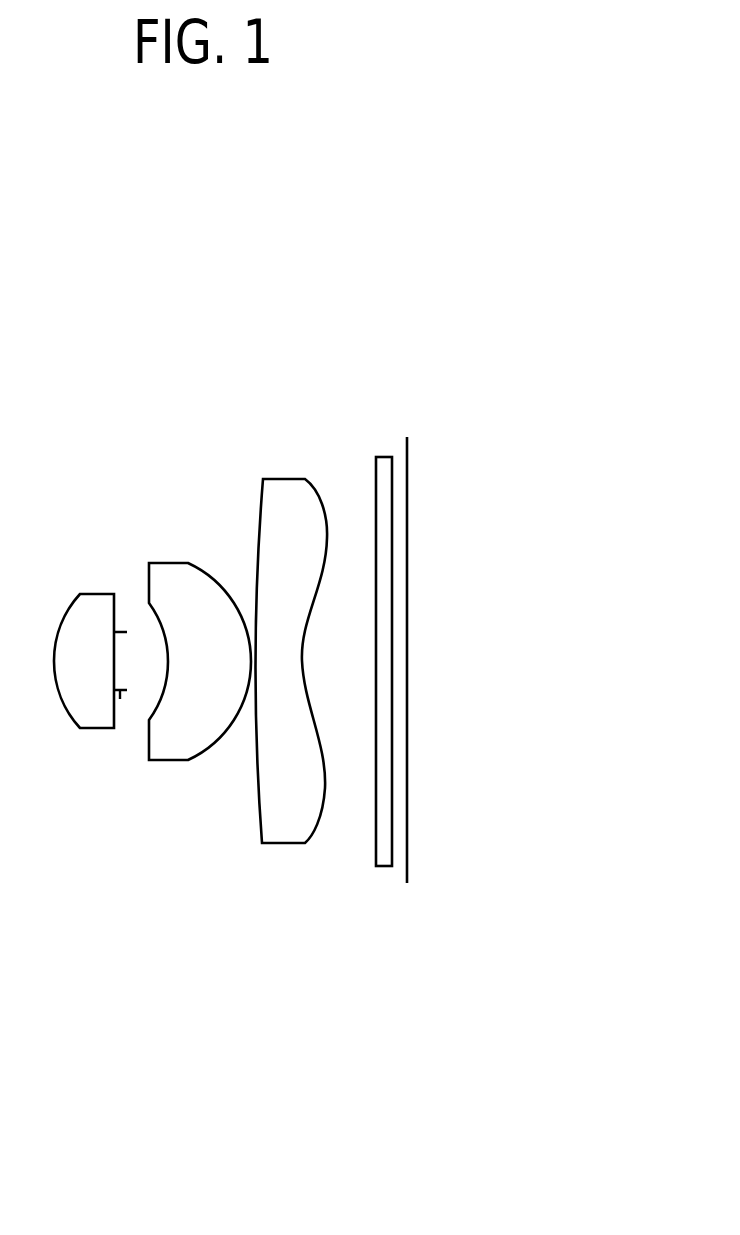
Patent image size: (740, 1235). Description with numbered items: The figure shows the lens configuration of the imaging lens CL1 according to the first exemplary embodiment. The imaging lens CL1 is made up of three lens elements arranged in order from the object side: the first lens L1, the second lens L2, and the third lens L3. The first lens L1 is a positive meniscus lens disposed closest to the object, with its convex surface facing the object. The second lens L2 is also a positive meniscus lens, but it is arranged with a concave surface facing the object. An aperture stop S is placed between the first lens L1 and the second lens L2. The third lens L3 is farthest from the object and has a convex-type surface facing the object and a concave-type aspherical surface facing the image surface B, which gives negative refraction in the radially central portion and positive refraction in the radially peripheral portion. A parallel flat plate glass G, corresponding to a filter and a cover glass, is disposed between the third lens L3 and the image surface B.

The imaging lens CL1 is at (476, 329).
The first lens L1 is at (90, 730).
The aperture stop S is at (121, 630).
The second lens L2 is at (183, 762).
The third lens L3 is at (290, 843).
The parallel flat plate glass G is at (387, 457).
The image surface B is at (407, 458).